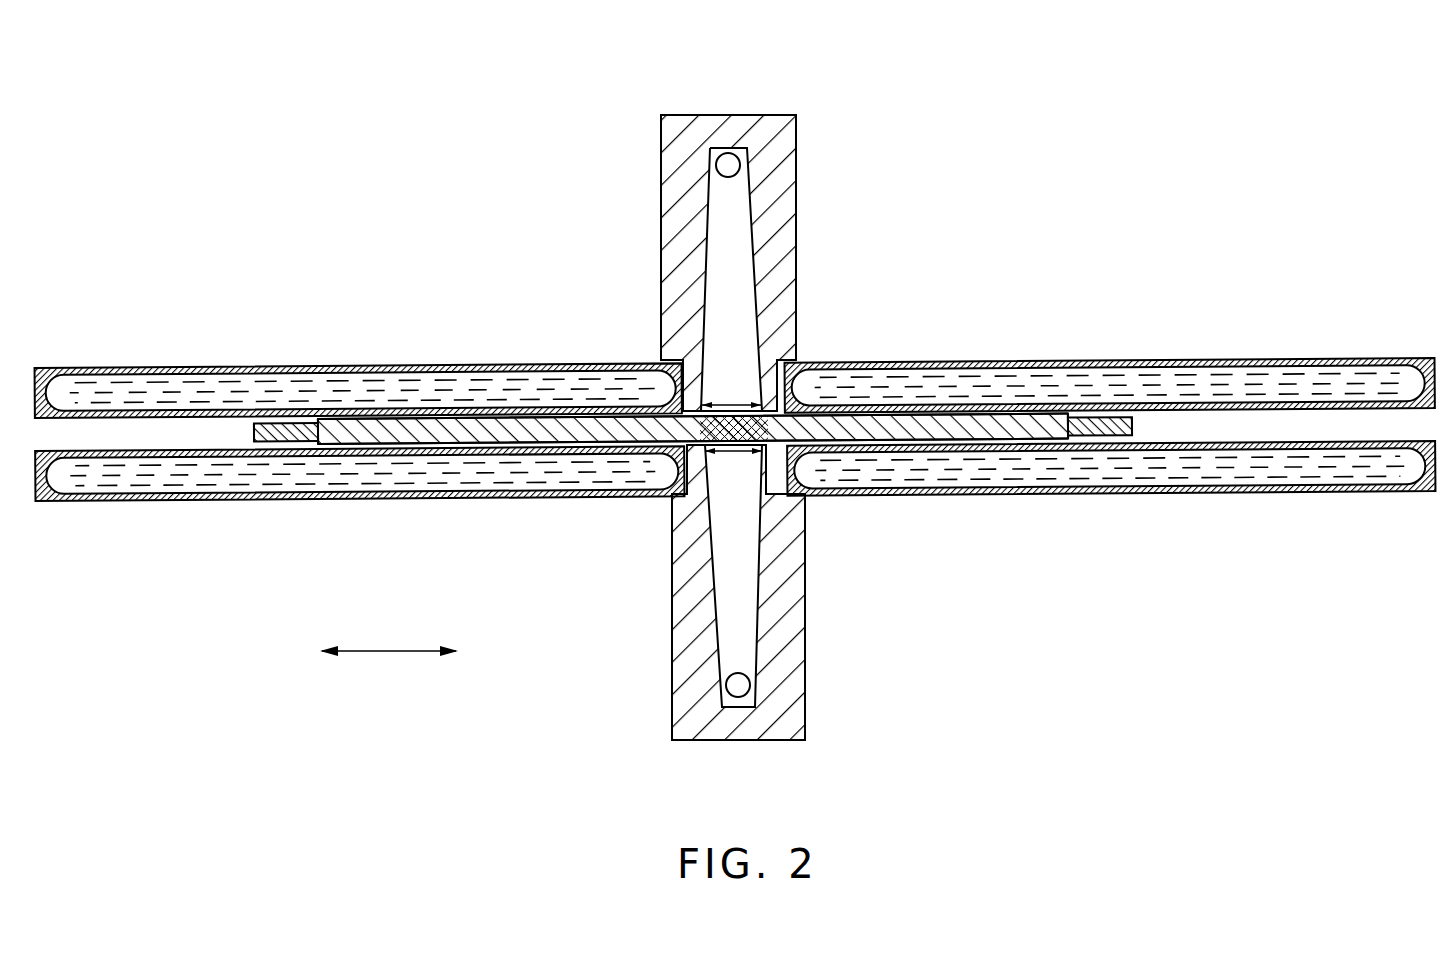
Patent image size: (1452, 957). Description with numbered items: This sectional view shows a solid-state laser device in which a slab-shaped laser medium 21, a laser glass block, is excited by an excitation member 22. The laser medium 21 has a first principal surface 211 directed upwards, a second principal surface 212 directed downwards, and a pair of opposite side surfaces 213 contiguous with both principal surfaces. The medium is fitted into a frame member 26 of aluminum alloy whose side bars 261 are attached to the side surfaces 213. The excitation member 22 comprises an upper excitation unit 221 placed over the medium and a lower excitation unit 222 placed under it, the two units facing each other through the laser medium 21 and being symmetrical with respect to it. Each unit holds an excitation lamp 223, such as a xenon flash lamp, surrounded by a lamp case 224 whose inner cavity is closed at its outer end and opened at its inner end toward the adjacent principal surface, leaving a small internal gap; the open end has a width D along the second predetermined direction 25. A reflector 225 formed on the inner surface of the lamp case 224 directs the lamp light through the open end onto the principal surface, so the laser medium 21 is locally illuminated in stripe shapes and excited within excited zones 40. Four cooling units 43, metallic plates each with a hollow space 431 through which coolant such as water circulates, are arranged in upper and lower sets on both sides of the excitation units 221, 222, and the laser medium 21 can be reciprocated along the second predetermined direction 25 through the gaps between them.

The excitation member 22 is at (840, 72).
The upper excitation unit 221 is at (822, 162).
The lower excitation unit 222 is at (822, 673).
The excitation lamp 223 is at (740, 690).
The lamp case 224 is at (806, 625).
The reflector 225 is at (754, 576).
The excited zone 40 is at (745, 410).
The cooling unit 43 is at (1200, 496).
The hollow space 431 is at (993, 482).
The slab-shaped laser medium 21 is at (530, 441).
The first principal surface 211 is at (452, 416).
The second principal surface 212 is at (455, 441).
The side surfaces 213 is at (1066, 441).
The frame member 26 is at (1112, 441).
The side bars 261 is at (1133, 430).
The second predetermined direction 25 is at (392, 653).